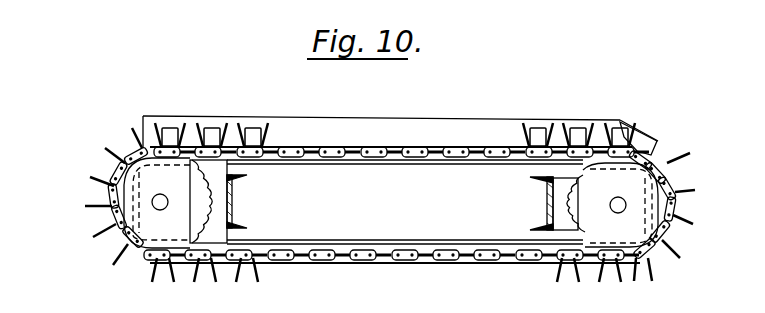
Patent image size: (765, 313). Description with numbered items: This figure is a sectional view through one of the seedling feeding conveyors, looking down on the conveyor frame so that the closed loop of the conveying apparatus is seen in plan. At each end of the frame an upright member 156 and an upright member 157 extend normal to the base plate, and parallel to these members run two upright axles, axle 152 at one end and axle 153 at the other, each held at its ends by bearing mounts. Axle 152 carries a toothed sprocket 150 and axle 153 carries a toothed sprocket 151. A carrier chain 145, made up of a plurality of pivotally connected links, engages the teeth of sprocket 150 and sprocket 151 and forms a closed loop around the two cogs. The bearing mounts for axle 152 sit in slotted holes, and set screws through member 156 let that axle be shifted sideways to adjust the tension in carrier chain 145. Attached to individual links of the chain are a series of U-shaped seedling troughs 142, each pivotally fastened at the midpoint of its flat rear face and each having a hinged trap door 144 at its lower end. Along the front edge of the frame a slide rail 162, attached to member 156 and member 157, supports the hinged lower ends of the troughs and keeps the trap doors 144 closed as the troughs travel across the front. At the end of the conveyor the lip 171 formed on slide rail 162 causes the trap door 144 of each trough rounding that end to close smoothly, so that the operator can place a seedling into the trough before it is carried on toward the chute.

The seedling trough 142 is at (169, 128).
The hinged trap door 144 is at (256, 128).
The slide rail 162 is at (402, 138).
The carrier chain 145 is at (412, 156).
The lip 171 is at (648, 130).
The member 156 is at (231, 177).
The sprocket 150 is at (197, 193).
The axle 152 is at (160, 210).
The member 157 is at (549, 184).
The sprocket 151 is at (586, 214).
The axle 153 is at (616, 199).